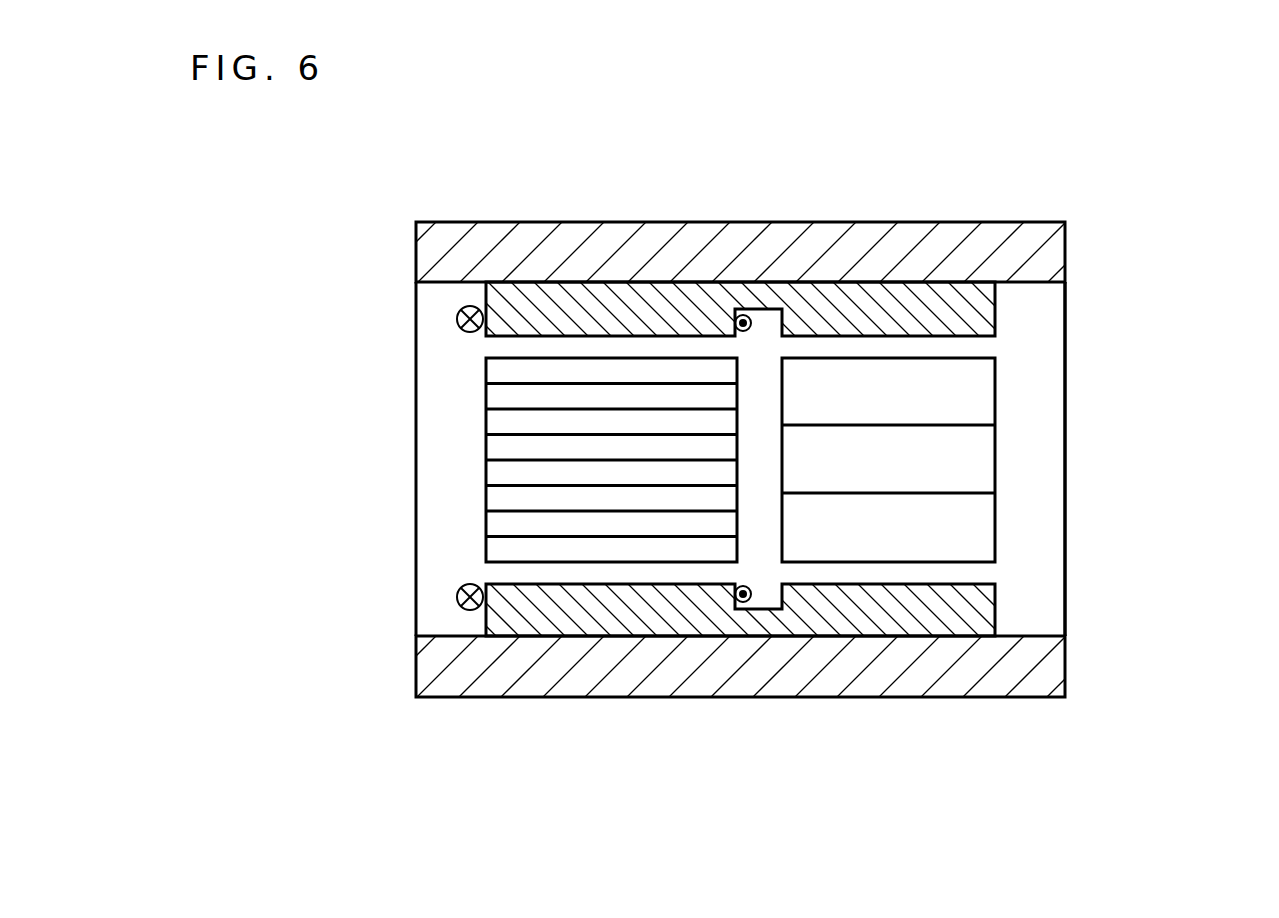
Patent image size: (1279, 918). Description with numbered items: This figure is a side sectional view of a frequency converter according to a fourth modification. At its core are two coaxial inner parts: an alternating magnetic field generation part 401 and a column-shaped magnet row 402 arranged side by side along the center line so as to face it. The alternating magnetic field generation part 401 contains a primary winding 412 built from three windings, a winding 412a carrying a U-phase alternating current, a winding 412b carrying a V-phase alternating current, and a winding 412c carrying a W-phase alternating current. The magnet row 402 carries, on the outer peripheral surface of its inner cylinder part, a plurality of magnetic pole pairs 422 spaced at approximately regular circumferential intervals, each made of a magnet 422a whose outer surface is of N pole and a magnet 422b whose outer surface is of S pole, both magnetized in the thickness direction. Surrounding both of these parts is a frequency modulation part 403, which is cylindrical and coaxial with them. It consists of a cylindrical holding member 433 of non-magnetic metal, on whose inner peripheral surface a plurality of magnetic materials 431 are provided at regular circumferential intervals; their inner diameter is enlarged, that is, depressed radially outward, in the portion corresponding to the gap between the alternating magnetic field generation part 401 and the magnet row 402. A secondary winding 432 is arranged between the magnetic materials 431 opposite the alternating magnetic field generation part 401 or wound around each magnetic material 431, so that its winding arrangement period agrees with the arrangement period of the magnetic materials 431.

The alternating magnetic field generation part 401 is at (478, 348).
The magnet row 402 is at (985, 350).
The frequency modulation part 403 is at (530, 221).
The primary winding 412 is at (482, 460).
The winding 412a is at (487, 372).
The winding 412b is at (487, 397).
The winding 412c is at (487, 421).
The magnetic pole pair 422 is at (1016, 460).
The magnet 422a is at (984, 390).
The magnet 422b is at (984, 460).
The magnetic material 431 is at (623, 302).
The secondary winding 432 is at (743, 314).
The cylindrical holding member 433 is at (1018, 242).